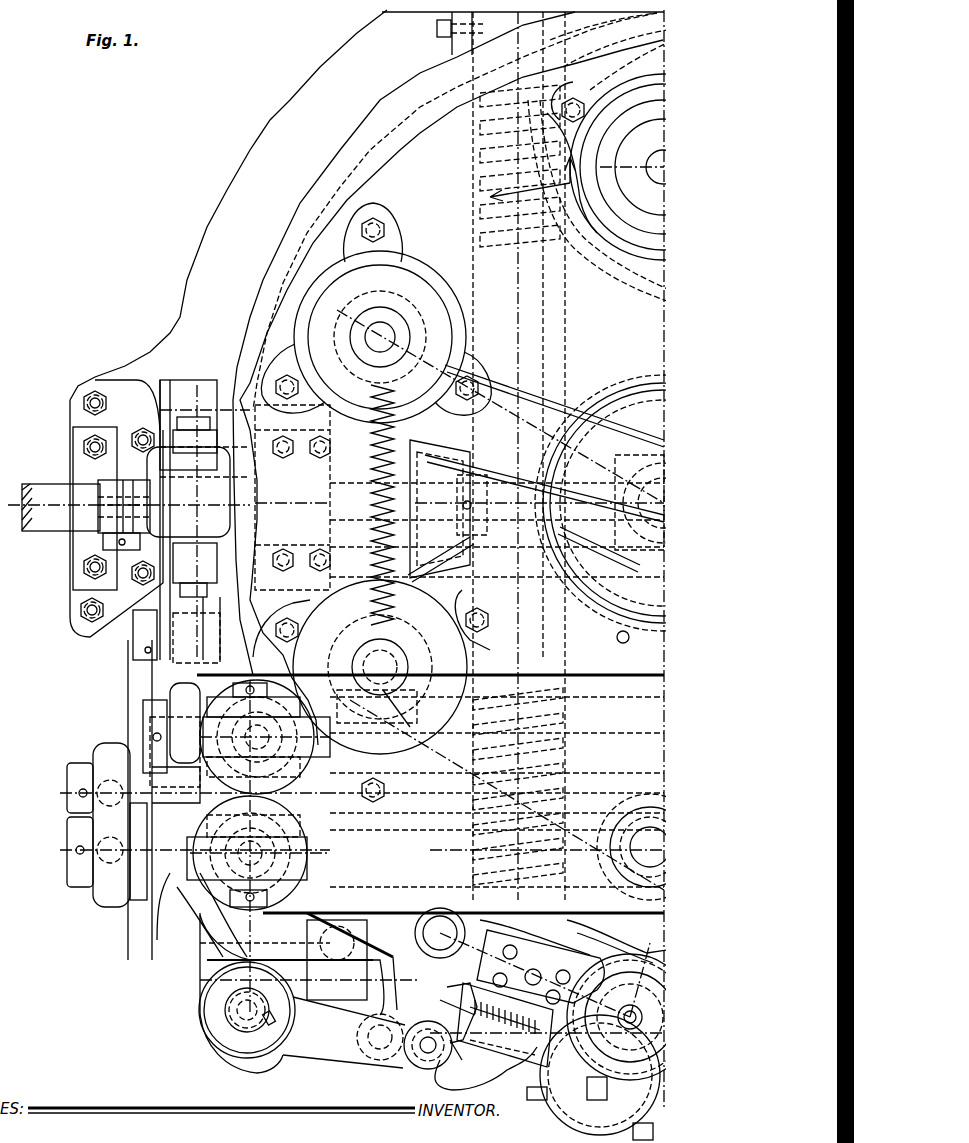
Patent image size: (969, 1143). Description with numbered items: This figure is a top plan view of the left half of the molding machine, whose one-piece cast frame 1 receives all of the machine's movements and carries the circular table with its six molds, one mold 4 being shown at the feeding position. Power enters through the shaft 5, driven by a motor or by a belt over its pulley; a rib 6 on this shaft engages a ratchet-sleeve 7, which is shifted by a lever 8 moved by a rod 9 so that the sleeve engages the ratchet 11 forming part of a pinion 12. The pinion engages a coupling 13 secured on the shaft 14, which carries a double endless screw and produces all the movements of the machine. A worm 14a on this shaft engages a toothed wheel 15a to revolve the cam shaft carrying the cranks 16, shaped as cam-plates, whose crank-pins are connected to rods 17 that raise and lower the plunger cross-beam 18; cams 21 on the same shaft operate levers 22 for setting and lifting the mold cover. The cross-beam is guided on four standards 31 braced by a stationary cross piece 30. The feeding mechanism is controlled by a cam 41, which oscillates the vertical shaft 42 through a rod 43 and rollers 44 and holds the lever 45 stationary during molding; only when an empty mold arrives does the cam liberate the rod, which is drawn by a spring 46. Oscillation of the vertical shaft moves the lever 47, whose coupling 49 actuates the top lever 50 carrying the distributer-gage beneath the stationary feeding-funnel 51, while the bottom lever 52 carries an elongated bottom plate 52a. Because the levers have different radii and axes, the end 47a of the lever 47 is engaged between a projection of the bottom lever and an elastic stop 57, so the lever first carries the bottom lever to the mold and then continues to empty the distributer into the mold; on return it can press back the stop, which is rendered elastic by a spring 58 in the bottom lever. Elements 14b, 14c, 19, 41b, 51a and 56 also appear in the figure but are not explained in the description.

The frame 1 is at (367, 560).
The mold 4 is at (430, 312).
The shaft 5 is at (42, 488).
The rib 6 is at (214, 497).
The ratchet-sleeve 7 is at (228, 536).
The lever 8 is at (96, 491).
The rod 9 is at (96, 516).
The ratchet 11 is at (292, 509).
The pinion 12 is at (448, 509).
The coupling 13 is at (536, 473).
The shaft 14 is at (564, 322).
The worm 14a is at (518, 786).
The teeth 14b is at (507, 166).
The arm 14c is at (623, 167).
The toothed wheel 15a is at (541, 808).
The cranks 16 is at (67, 793).
The rods 17 is at (108, 897).
The cross-beam 18 is at (67, 851).
The pinion 19 is at (566, 765).
The cams 21 is at (182, 797).
The levers 22 is at (201, 915).
The cross piece or brace 30 is at (310, 844).
The standards 31 is at (258, 846).
The cam 41 is at (312, 926).
The arm 41b is at (372, 821).
The vertical shaft 42 is at (247, 1017).
The rod 43 is at (369, 838).
The rollers 44 is at (382, 875).
The lever 45 is at (360, 1065).
The spring 46 is at (395, 505).
The lever 47 is at (506, 1015).
The end of lever 47a is at (471, 1050).
The coupling 49 is at (453, 1013).
The lever 50 is at (529, 967).
The feeding-funnel 51 is at (561, 1011).
The cam shaft 51a is at (644, 1019).
The lever 52 is at (505, 1025).
The elongated bottom plate 52a is at (575, 1077).
The pin 56 is at (481, 1074).
The elastic stop 57 is at (457, 1009).
The spring 58 is at (502, 1046).